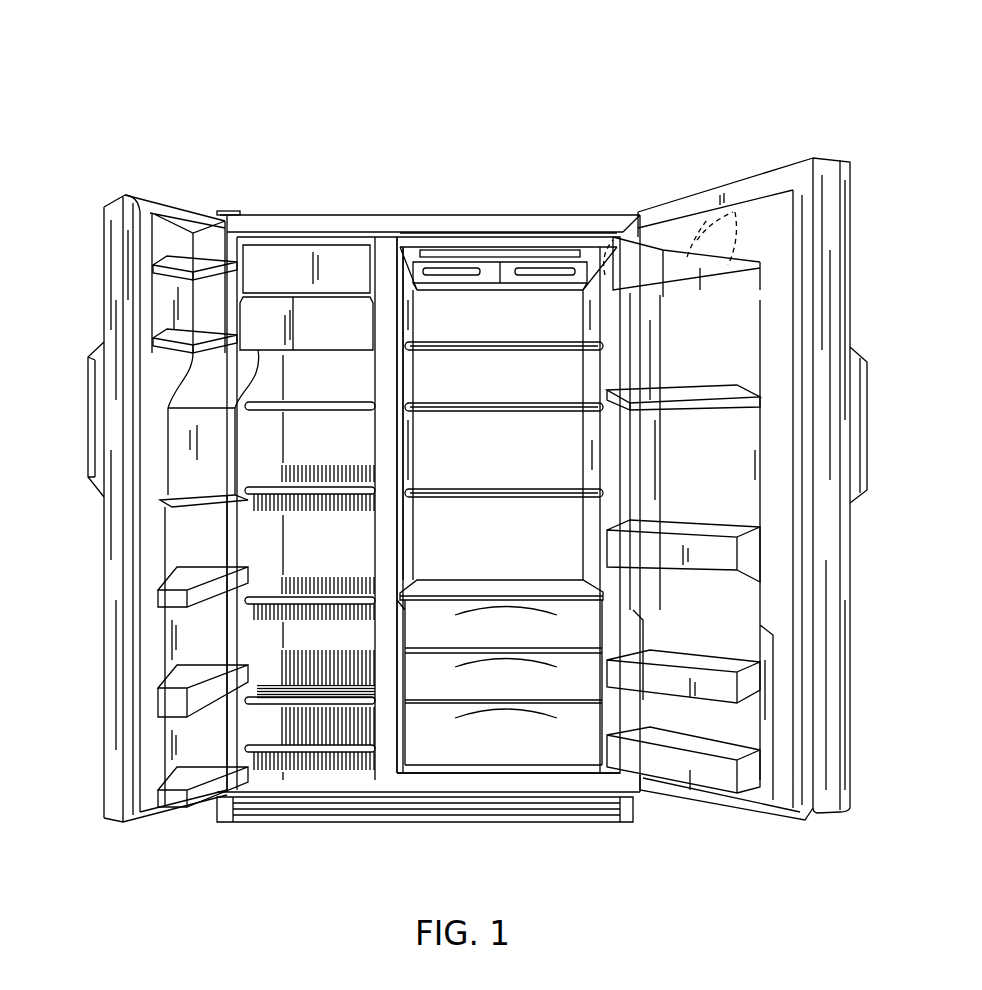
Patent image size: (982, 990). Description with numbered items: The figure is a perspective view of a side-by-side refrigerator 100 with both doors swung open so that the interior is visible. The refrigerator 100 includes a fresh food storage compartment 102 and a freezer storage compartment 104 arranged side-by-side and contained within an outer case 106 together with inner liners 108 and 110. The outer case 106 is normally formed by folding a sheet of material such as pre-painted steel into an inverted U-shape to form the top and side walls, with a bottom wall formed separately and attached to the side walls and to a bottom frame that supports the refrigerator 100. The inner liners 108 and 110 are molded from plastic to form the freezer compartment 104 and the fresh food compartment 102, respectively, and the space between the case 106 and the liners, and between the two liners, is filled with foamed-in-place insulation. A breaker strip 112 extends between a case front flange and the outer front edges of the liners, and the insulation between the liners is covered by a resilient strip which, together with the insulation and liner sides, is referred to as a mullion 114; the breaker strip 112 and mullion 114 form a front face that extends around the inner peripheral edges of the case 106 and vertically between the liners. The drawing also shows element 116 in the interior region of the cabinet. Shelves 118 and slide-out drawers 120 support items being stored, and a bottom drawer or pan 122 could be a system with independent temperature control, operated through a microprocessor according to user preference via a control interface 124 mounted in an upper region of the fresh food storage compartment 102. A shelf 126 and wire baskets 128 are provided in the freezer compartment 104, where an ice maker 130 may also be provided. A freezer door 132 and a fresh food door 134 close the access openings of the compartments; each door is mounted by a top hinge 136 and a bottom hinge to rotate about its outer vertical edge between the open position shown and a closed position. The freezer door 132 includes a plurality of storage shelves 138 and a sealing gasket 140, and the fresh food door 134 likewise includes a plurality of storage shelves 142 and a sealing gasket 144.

The refrigerator 100 is at (503, 62).
The fresh food storage compartment 102 is at (591, 240).
The freezer storage compartment 104 is at (339, 265).
The outer case 106 is at (467, 205).
The inner liner 108 is at (533, 247).
The inner liner 110 is at (287, 240).
The breaker strip 112 is at (545, 226).
The mullion 114 is at (385, 500).
The freezer side wall 116 is at (416, 440).
The shelves 118 is at (497, 362).
The slide-out drawers 120 is at (518, 645).
The bottom drawer or pan 122 is at (518, 759).
The control interface 124 is at (440, 250).
The shelf 126 is at (310, 420).
The wire baskets 128 is at (272, 567).
The ice maker 130 is at (307, 330).
The freezer door 132 is at (92, 203).
The fresh food door 134 is at (864, 218).
The top hinge 136 is at (230, 211).
The storage shelves 138 is at (170, 793).
The sealing gasket 140 is at (142, 203).
The storage shelves 142 is at (672, 545).
The sealing gasket 144 is at (785, 183).